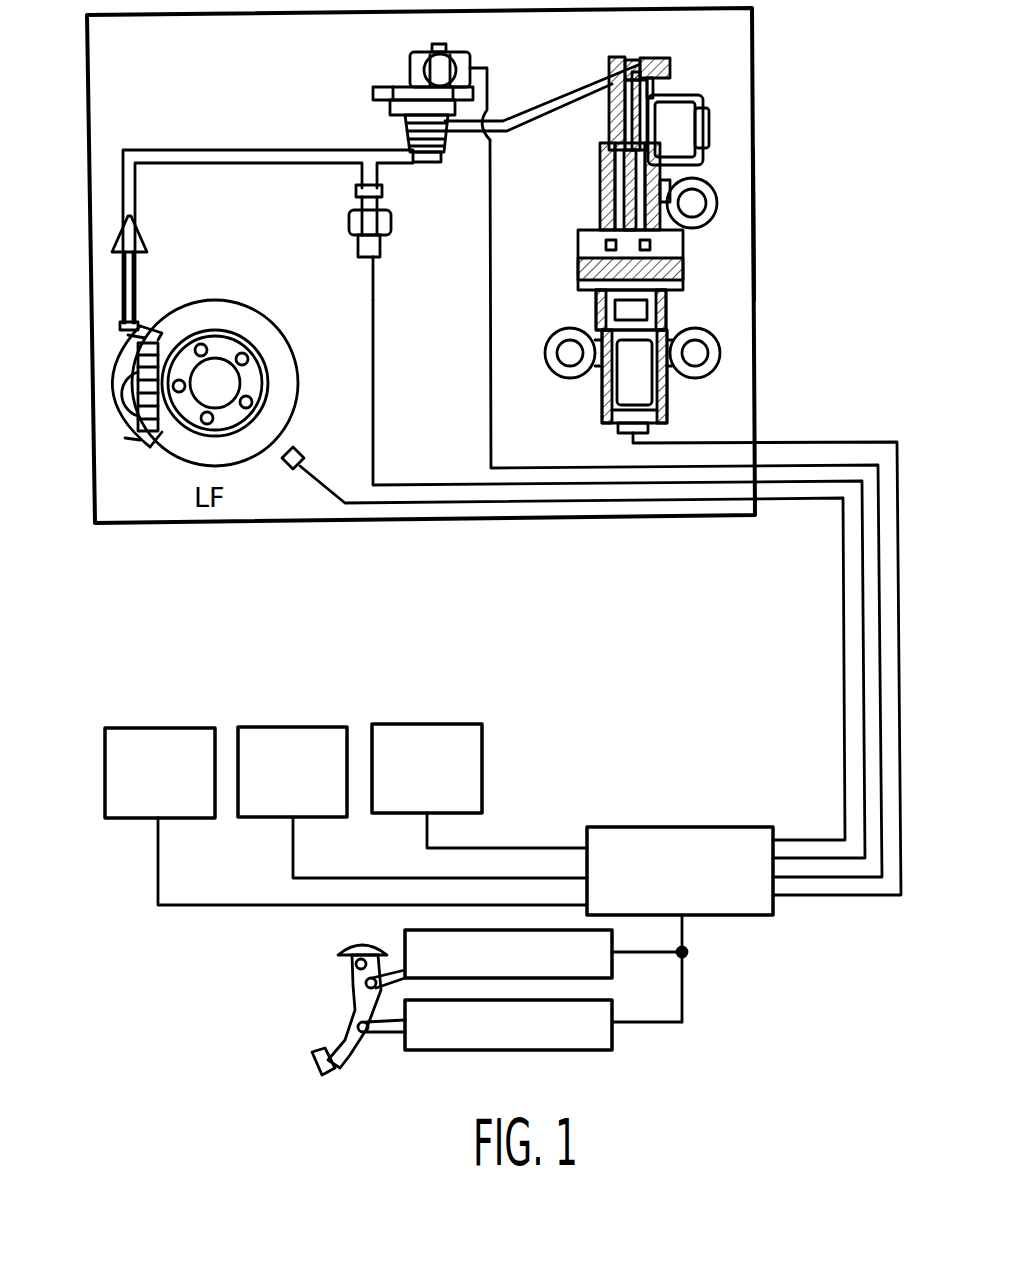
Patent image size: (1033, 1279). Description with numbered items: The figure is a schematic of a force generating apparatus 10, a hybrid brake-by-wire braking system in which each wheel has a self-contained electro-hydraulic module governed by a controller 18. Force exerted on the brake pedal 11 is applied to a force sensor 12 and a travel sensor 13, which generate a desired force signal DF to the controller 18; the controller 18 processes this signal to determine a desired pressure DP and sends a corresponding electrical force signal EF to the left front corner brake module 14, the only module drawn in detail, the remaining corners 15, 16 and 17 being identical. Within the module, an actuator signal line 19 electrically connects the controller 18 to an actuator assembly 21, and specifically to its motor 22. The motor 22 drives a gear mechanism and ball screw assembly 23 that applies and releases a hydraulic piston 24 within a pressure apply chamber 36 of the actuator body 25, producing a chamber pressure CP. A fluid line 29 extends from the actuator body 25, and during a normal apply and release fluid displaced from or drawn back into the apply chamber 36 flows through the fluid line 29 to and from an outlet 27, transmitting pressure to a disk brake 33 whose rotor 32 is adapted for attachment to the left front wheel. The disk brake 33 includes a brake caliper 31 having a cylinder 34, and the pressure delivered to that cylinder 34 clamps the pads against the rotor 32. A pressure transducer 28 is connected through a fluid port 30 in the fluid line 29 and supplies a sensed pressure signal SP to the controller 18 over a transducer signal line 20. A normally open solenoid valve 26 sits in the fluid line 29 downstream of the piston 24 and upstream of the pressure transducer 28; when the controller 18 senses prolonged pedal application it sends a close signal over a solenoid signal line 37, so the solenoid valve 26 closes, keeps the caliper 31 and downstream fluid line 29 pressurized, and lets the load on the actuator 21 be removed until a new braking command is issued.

The force generating apparatus 10 is at (768, 60).
The brake pedal 11 is at (340, 1028).
The force sensor 12 is at (616, 1050).
The travel sensor 13 is at (614, 975).
The left front corner brake module 14 is at (765, 215).
The corner 15 is at (175, 728).
The corner 16 is at (308, 727).
The corner 17 is at (445, 724).
The controller 18 is at (722, 827).
The actuator signal line 19 is at (870, 440).
The transducer signal line 20 is at (378, 370).
The actuator assembly 21 is at (703, 452).
The motor 22 is at (676, 398).
The gear mechanism and ball screw assembly 23 is at (600, 212).
The hydraulic piston 24 is at (604, 140).
The actuator body 25 is at (680, 70).
The solenoid valve 26 is at (398, 50).
The outlet 27 is at (148, 238).
The pressure transducer 28 is at (348, 225).
The fluid line 29 is at (178, 155).
The fluid port 30 is at (352, 182).
The brake caliper 31 is at (122, 447).
The rotor 32 is at (292, 345).
The disk brake 33 is at (246, 296).
The cylinder 34 is at (487, 212).
The pressure apply chamber 36 is at (688, 97).
The solenoid signal line 37 is at (380, 292).